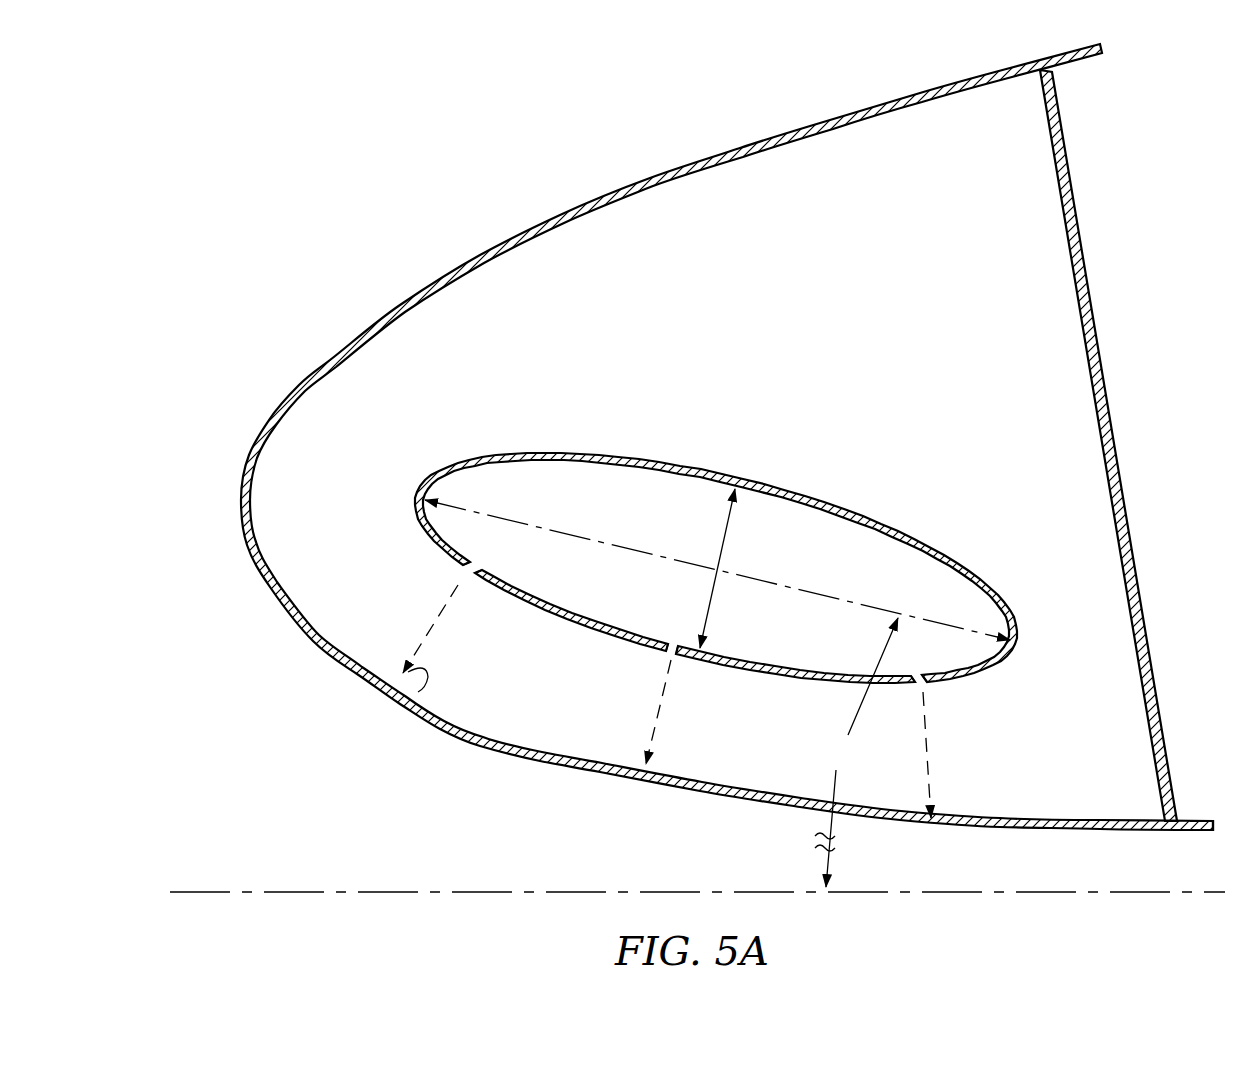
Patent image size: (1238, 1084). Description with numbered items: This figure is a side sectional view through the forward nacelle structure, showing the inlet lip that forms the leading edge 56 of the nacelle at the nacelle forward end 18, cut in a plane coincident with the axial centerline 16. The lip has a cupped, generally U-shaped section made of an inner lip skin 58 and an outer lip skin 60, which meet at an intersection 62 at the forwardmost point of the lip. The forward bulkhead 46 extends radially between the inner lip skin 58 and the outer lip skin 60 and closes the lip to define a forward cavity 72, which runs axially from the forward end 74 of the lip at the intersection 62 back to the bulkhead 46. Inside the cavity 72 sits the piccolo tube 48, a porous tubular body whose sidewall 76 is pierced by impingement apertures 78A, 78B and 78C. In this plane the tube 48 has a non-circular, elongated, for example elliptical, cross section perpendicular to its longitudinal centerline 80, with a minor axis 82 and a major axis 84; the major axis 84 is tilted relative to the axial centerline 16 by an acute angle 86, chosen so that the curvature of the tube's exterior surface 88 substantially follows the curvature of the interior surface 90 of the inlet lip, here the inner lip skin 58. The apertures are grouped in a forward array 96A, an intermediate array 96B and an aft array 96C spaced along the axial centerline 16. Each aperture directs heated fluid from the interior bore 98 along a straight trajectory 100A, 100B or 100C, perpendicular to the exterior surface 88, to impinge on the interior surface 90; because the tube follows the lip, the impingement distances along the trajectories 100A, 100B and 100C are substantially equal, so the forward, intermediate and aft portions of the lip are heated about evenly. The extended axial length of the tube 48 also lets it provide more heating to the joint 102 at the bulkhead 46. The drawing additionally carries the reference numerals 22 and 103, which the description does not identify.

The axial centerline 16 is at (1199, 893).
The nacelle forward end 18 is at (679, 437).
The vane 22 is at (679, 437).
The forward bulkhead 46 is at (1063, 158).
The piccolo tube 48 is at (624, 651).
The leading edge 56 is at (679, 437).
The inner lip skin 58 is at (709, 437).
The outer lip skin 60 is at (709, 437).
The intersection 62 is at (679, 437).
The forward cavity 72 is at (597, 344).
The forward end of the inlet lip 74 is at (250, 507).
The tubular sidewall 76 is at (578, 629).
The forward aperture 78A is at (466, 578).
The intermediate aperture 78B is at (668, 660).
The aft aperture 78C is at (918, 688).
The longitudinal centerline 80 is at (712, 569).
The minor axis 82 is at (733, 522).
The major axis 84 is at (878, 606).
The angle 86 is at (856, 752).
The exterior surface 88 is at (750, 678).
The interior surface 90 is at (716, 621).
The forward array 96A is at (450, 577).
The intermediate array 96B is at (677, 663).
The aft array 96C is at (929, 691).
The interior bore 98 is at (667, 518).
The forward aperture trajectory 100A is at (413, 698).
The intermediate aperture trajectory 100B is at (652, 737).
The aft aperture trajectory 100C is at (931, 775).
The joint 102 is at (1182, 840).
The gap 103 is at (546, 718).